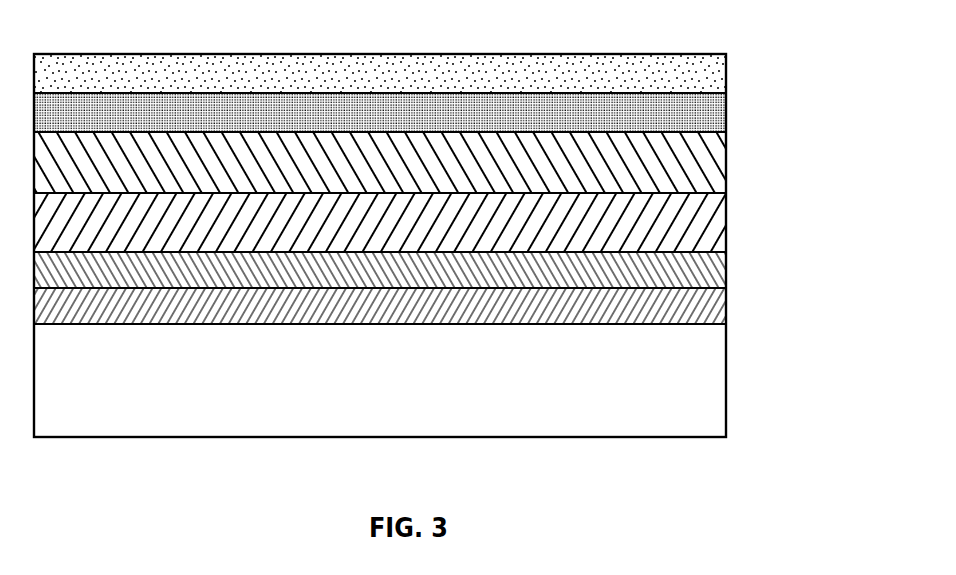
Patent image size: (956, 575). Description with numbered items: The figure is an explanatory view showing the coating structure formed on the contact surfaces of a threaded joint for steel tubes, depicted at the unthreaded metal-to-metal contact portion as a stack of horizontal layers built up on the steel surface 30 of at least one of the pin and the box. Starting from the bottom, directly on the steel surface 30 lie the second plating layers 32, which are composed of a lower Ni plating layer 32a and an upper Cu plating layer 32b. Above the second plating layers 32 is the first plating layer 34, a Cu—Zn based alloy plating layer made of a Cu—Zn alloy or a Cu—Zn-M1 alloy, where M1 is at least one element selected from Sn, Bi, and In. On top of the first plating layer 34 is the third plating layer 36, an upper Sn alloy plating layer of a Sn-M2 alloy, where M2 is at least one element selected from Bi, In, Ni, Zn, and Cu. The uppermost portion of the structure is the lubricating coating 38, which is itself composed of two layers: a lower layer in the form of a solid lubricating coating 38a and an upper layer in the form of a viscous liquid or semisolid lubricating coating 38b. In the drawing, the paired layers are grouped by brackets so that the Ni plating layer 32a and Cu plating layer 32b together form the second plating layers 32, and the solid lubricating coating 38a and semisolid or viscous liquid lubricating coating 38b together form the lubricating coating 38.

The steel surface 30 is at (726, 380).
The lower second plating layer 32 is at (449, 282).
The Ni plating layer 32a is at (726, 306).
The Cu plating layer 32b is at (726, 269).
The Cu—Zn based alloy plating layer (first plating layer) 34 is at (726, 222).
The upper Sn alloy plating layer (third plating layer) 36 is at (726, 160).
The lubricating coating 38 is at (449, 88).
The solid lubricating coating 38a is at (726, 112).
The semisolid or viscous liquid lubricating coating 38b is at (726, 73).